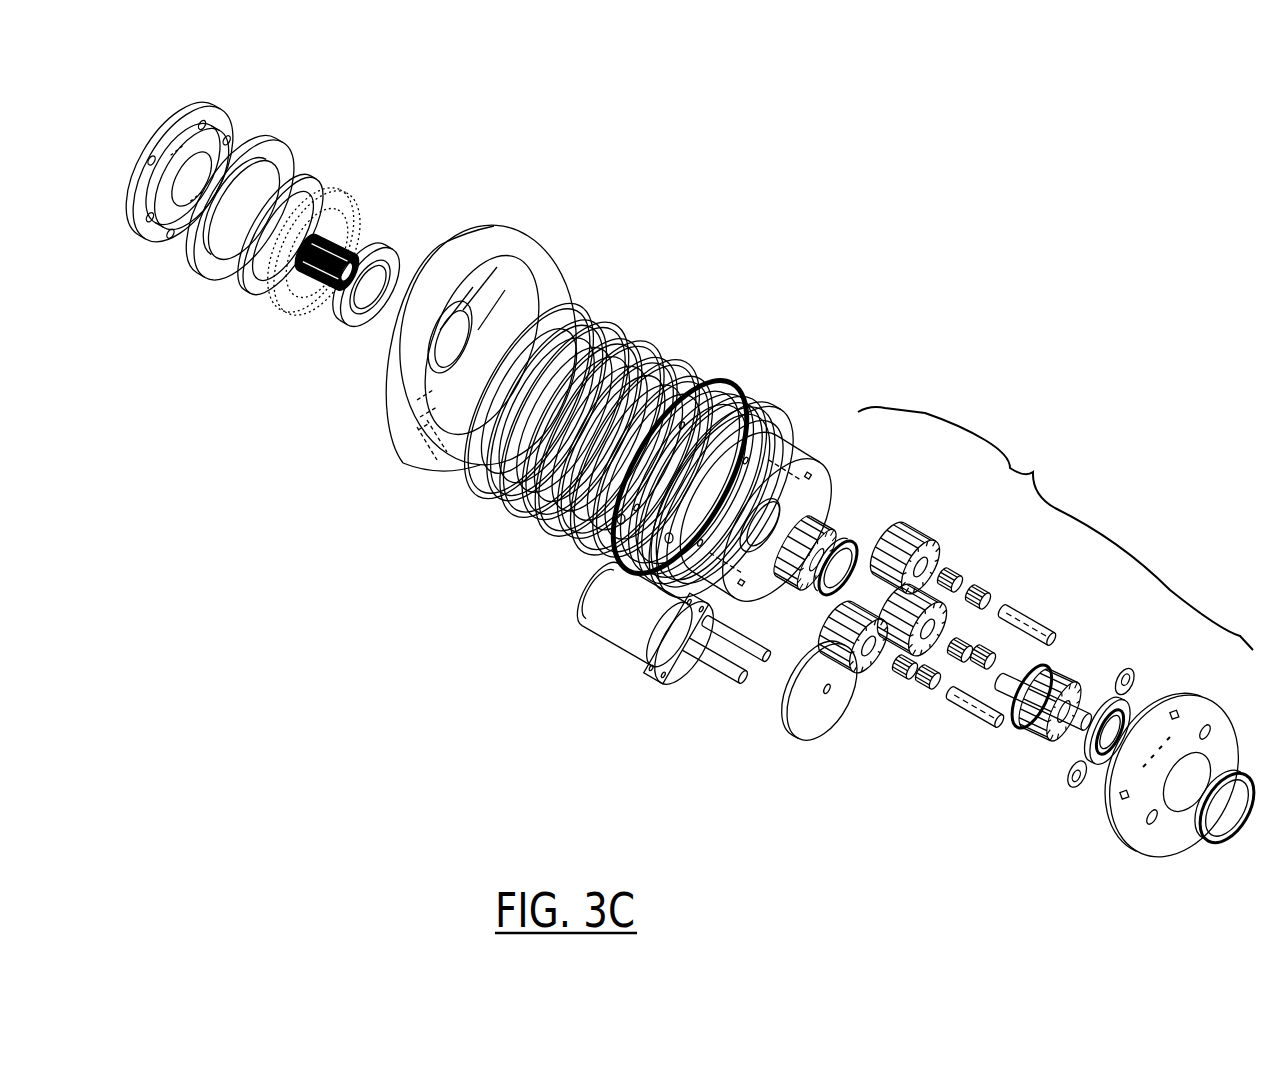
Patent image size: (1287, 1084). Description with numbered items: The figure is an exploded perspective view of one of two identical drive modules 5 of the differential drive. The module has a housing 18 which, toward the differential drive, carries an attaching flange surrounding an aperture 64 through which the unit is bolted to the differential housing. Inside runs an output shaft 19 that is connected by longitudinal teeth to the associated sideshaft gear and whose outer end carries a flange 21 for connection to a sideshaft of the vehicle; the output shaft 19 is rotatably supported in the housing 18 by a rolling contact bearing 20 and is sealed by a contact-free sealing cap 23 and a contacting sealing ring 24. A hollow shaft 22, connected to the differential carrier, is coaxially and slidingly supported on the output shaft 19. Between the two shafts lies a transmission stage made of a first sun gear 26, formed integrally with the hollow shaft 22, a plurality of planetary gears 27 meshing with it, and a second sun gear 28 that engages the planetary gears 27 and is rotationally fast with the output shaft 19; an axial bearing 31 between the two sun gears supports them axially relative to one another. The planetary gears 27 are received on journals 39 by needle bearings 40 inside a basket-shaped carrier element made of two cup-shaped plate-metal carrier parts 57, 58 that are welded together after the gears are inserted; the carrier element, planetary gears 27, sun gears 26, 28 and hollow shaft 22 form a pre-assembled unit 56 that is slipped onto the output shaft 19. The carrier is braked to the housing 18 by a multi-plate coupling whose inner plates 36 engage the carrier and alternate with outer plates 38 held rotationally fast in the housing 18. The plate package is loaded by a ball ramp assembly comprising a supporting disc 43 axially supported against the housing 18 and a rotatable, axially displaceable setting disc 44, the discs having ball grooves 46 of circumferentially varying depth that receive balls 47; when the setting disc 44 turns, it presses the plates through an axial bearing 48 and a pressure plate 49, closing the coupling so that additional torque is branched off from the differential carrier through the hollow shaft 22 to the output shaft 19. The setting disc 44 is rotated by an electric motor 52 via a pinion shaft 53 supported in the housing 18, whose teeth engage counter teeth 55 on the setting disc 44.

The drive module 5 is at (801, 196).
The housing 18 is at (483, 237).
The output shaft 19 is at (243, 203).
The rolling contact bearing 20 is at (385, 250).
The flange 21 is at (213, 112).
The hollow shaft 22 is at (1095, 700).
The contact-free sealing cap 23 is at (296, 178).
The contacting sealing ring 24 is at (345, 200).
The first sun gear 26 is at (1065, 667).
The planetary gears 27 is at (913, 535).
The second sun gear 28 is at (823, 523).
The axial bearing 31 is at (857, 540).
The inner plates 36 is at (605, 317).
The outer plates 38 is at (583, 303).
The journals 39 is at (1012, 617).
The needle bearings 40 is at (953, 572).
The supporting disc 43 is at (782, 423).
The setting disc 44 is at (722, 393).
The ball grooves 46 is at (758, 398).
The balls 47 is at (665, 535).
The axial bearing 48 is at (695, 380).
The pressure plate 49 is at (668, 372).
The electric motor 52 is at (610, 628).
The pinion shaft 53 is at (800, 722).
The counter teeth 55 is at (617, 517).
The pre-assembled unit 56 is at (1055, 528).
The cup-shaped carrier part 57 is at (797, 457).
The cup-shaped carrier part 58 is at (1190, 710).
The aperture 64 is at (435, 440).